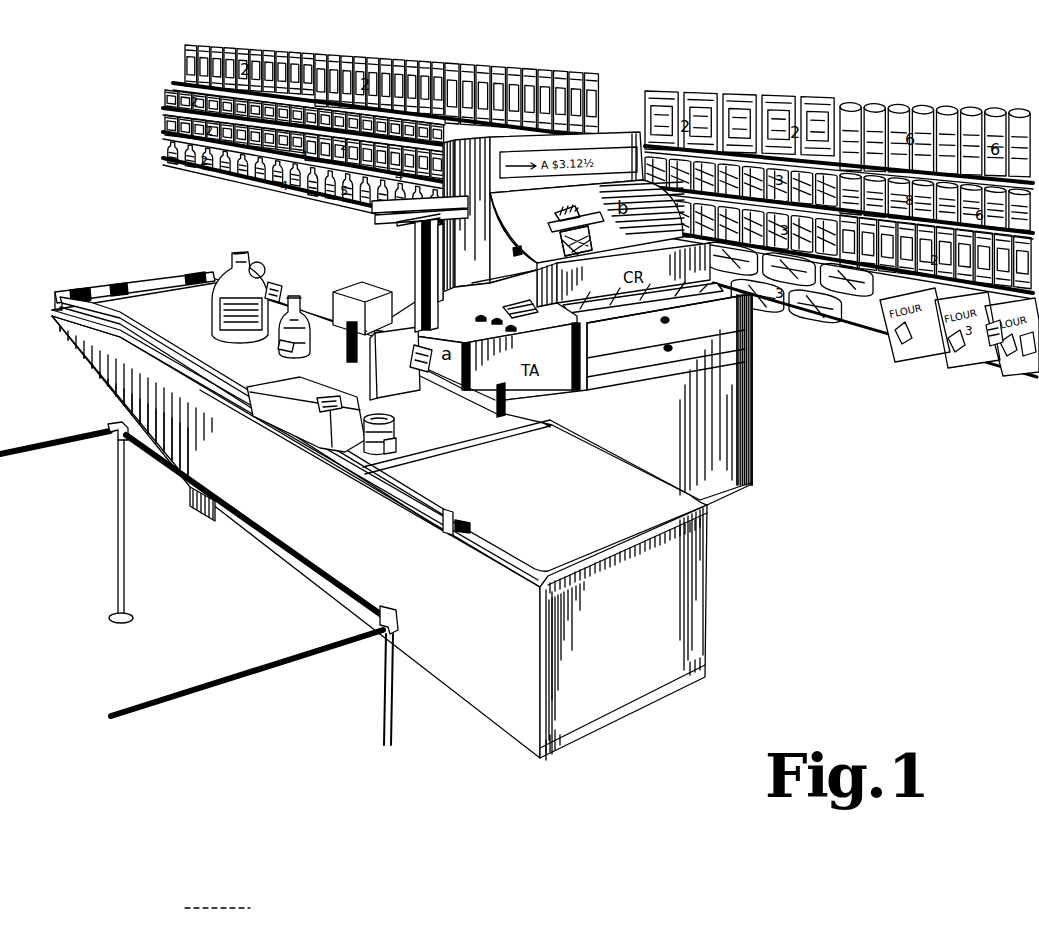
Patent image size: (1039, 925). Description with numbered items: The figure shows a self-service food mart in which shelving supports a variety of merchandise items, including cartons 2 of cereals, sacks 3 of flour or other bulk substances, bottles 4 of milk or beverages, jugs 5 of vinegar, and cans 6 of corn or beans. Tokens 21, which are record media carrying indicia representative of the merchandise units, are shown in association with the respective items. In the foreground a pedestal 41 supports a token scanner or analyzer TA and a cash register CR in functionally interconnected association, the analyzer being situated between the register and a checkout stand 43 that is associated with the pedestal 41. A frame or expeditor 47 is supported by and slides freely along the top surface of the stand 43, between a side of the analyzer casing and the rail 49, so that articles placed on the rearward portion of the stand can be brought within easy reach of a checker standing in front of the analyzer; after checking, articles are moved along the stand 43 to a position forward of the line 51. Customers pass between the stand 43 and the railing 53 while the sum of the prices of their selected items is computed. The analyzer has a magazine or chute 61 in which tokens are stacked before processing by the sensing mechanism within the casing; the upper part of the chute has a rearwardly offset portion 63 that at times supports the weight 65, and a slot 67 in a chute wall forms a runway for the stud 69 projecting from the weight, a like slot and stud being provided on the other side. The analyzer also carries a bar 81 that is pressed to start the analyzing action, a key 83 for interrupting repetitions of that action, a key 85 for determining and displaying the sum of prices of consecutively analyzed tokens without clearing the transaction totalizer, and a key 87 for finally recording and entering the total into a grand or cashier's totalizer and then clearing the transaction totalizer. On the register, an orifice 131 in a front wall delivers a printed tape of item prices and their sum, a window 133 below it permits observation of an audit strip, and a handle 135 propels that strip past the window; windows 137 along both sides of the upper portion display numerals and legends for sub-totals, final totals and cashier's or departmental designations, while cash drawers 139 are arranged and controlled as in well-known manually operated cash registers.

The cartons 2 is at (392, 392).
The sacks 3 is at (282, 376).
The bottles 4 is at (300, 307).
The jugs 5 is at (232, 272).
The cans 6 is at (396, 419).
The tokens 21 is at (278, 284).
The pedestal 41 is at (677, 576).
The checkout stand 43 is at (212, 307).
The frame or expeditor 47 is at (141, 284).
The rail 49 is at (405, 500).
The line 51 is at (482, 442).
The railing 53 is at (182, 472).
The magazine or chute 61 is at (420, 253).
The rearwardly offset portion 63 is at (372, 226).
The weight 65 is at (372, 206).
The slot 67 is at (425, 224).
The stud 69 is at (398, 221).
The bar 81 is at (512, 307).
The button or key 83 is at (481, 316).
The button or key 85 is at (497, 319).
The button or key 87 is at (515, 331).
The orifice 131 is at (578, 210).
The window 133 is at (540, 250).
The handle 135 is at (514, 250).
The windows 137 is at (567, 160).
The cash drawers 139 is at (652, 357).